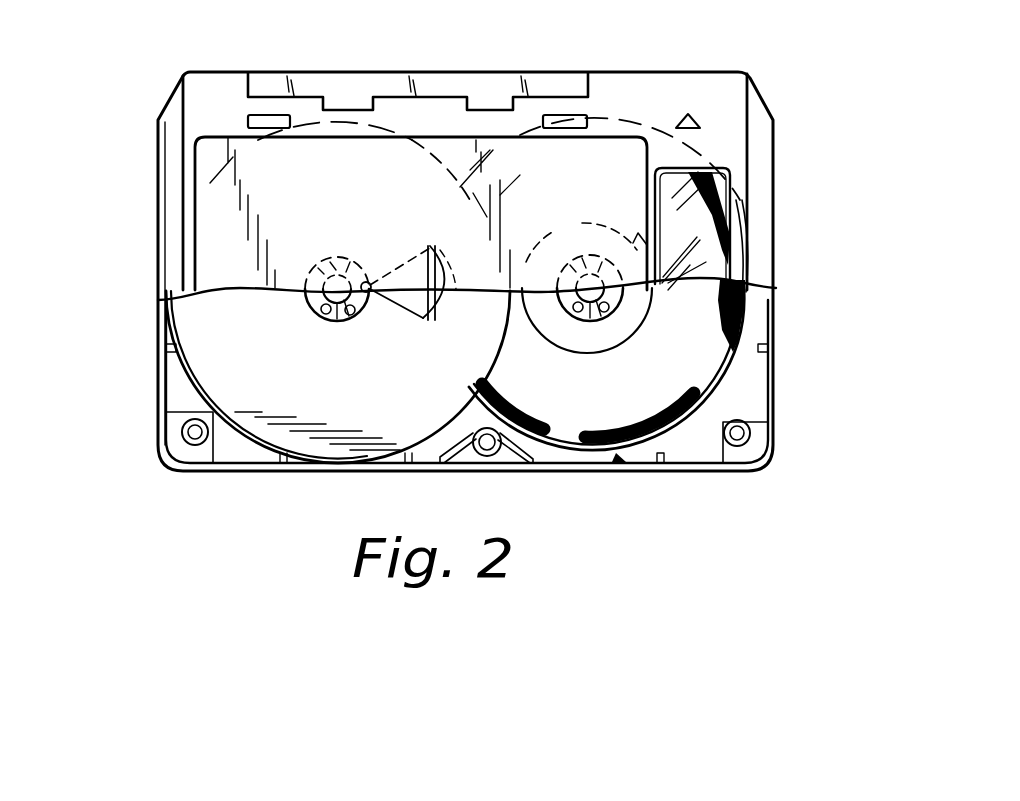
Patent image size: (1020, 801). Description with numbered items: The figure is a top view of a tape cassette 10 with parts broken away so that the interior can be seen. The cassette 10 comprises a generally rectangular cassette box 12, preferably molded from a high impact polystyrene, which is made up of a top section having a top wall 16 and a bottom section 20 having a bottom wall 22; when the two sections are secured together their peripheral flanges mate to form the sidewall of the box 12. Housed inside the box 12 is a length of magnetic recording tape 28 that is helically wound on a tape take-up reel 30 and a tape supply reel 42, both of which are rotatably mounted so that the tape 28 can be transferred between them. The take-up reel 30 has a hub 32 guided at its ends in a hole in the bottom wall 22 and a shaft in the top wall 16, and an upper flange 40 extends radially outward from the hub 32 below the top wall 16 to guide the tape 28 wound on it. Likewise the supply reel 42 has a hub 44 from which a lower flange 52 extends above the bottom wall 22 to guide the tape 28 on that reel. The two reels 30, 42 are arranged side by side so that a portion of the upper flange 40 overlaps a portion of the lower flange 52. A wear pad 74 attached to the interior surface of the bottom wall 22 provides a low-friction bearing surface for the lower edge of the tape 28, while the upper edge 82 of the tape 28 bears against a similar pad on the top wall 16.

The tape cassette 10 is at (137, 522).
The cassette box 12 is at (156, 246).
The top wall 16 is at (679, 88).
The bottom section 20 is at (158, 373).
The bottom wall 22 is at (752, 395).
The magnetic recording tape 28 is at (748, 309).
The tape take-up reel 30 is at (250, 432).
The hub 32 is at (340, 322).
The upper flange 40 is at (300, 398).
The tape supply reel 42 is at (622, 462).
The hub 44 is at (582, 322).
The lower flange 52 is at (577, 455).
The wear pad 74 is at (197, 393).
The upper edge 82 is at (702, 363).